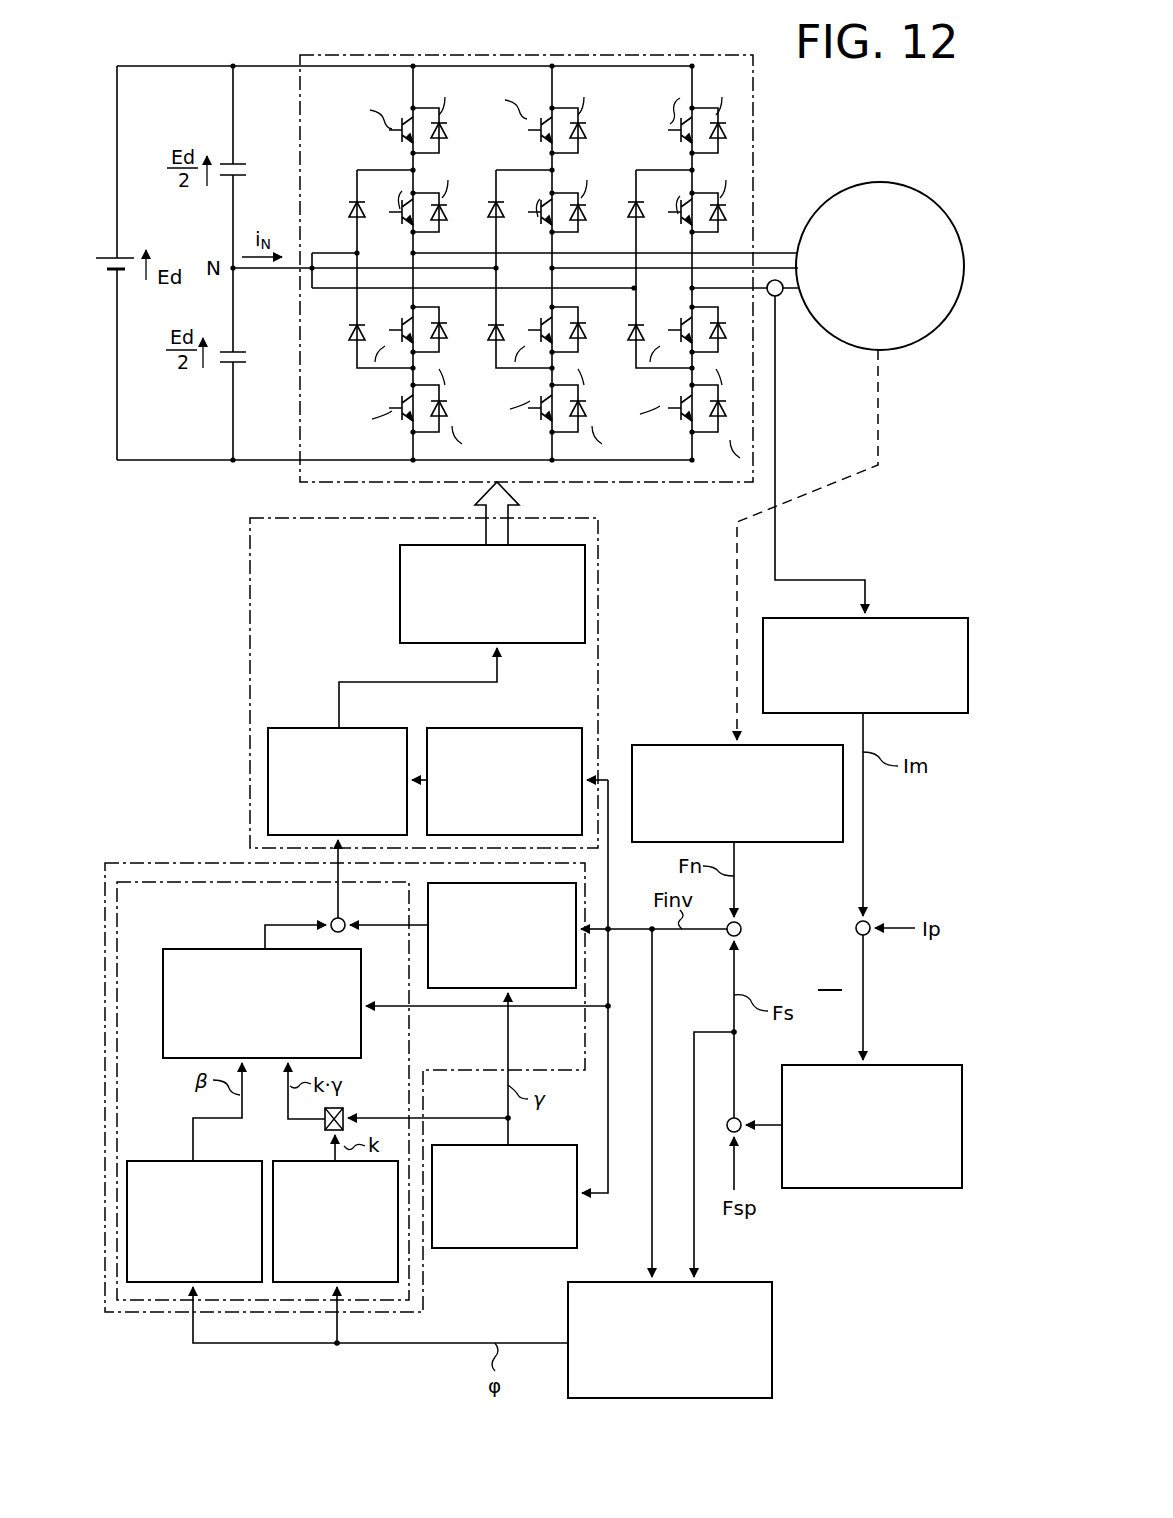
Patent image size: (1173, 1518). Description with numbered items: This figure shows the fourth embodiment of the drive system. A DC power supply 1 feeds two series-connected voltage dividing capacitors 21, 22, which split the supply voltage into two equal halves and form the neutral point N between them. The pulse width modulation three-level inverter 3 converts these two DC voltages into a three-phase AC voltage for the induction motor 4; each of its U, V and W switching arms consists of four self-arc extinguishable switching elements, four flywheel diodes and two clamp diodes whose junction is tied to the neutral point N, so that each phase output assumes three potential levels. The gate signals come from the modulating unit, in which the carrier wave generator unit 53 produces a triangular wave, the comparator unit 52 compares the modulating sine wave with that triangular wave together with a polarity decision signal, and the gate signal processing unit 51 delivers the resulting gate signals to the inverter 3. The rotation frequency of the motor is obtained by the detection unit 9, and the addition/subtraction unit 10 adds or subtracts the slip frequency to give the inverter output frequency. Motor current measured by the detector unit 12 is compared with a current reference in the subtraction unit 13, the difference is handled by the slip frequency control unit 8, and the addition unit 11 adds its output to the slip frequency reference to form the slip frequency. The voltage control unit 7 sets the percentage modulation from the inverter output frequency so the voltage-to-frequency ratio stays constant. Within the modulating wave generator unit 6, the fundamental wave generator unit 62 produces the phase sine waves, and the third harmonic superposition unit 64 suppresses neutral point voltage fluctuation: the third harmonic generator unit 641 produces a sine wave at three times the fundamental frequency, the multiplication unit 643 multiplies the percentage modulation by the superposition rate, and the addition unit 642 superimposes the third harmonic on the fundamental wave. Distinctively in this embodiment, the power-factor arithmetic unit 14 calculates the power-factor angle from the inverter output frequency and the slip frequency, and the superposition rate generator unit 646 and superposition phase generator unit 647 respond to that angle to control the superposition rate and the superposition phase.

The DC power supply 1 is at (112, 256).
The pulse width modulation three-level inverter 3 is at (555, 55).
The induction motor 4 is at (876, 182).
The voltage dividing capacitor 21 is at (237, 164).
The voltage dividing capacitor 22 is at (237, 352).
The gate signal processing unit 51 is at (400, 608).
The comparator unit 52 is at (298, 728).
The carrier wave generator unit 53 is at (542, 728).
The modulating wave generator unit 6 is at (208, 880).
The third harmonic superposition unit 64 is at (142, 862).
The fundamental wave generator unit 62 is at (548, 988).
The third harmonic generator unit 641 is at (193, 949).
The addition unit 642 is at (345, 931).
The multiplication unit 643 is at (337, 1108).
The superposition rate generator unit 646 is at (310, 1161).
The superposition phase generator unit 647 is at (160, 1161).
The voltage control unit 7 is at (497, 1248).
The slip frequency control unit 8 is at (858, 1188).
The detection unit 9 is at (698, 745).
The addition/subtraction unit 10 is at (742, 927).
The addition unit 11 is at (732, 1122).
The detector unit 12 is at (907, 618).
The subtraction unit 13 is at (857, 924).
The power-factor arithmetic unit 14 is at (772, 1326).